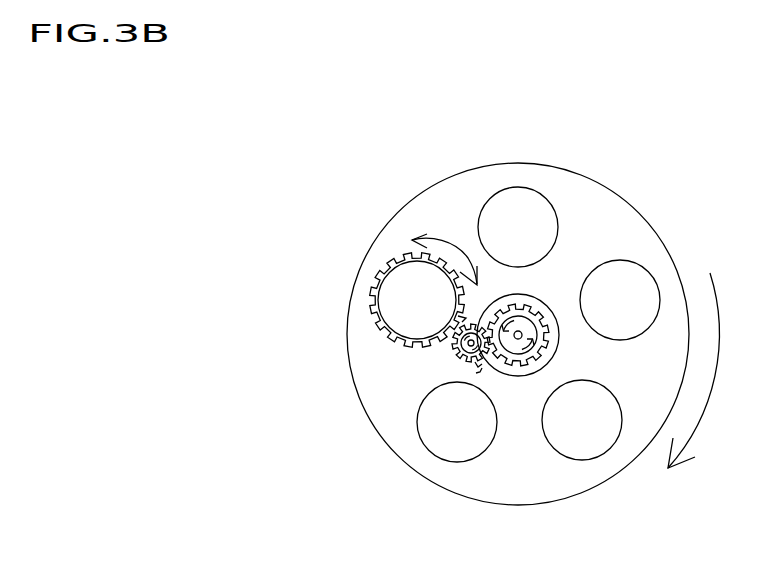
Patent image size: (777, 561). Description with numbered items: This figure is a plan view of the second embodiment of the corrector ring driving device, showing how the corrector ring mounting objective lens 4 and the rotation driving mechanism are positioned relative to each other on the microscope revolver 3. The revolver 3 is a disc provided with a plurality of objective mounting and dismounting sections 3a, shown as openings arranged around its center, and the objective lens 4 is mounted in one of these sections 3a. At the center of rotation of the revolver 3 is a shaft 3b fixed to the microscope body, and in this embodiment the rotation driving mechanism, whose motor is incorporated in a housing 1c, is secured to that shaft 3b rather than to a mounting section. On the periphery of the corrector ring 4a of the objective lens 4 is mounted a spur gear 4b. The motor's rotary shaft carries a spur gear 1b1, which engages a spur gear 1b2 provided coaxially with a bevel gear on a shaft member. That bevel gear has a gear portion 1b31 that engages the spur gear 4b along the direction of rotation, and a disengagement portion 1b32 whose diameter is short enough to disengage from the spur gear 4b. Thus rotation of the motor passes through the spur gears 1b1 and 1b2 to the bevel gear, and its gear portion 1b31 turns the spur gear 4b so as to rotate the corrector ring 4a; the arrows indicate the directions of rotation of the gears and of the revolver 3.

The revolver 3 is at (572, 193).
The objective mounting and dismounting section 3a is at (521, 190).
The shaft 3b is at (533, 302).
The corrector ring mounting objective lens 4 is at (367, 264).
The corrector ring 4a is at (393, 266).
The spur gear 4b is at (400, 258).
The spur gear 1b1 is at (511, 368).
The spur gear 1b2 is at (458, 365).
The gear portion 1b31 is at (478, 367).
The disengagement portion 1b32 is at (480, 372).
The housing 1c is at (545, 361).